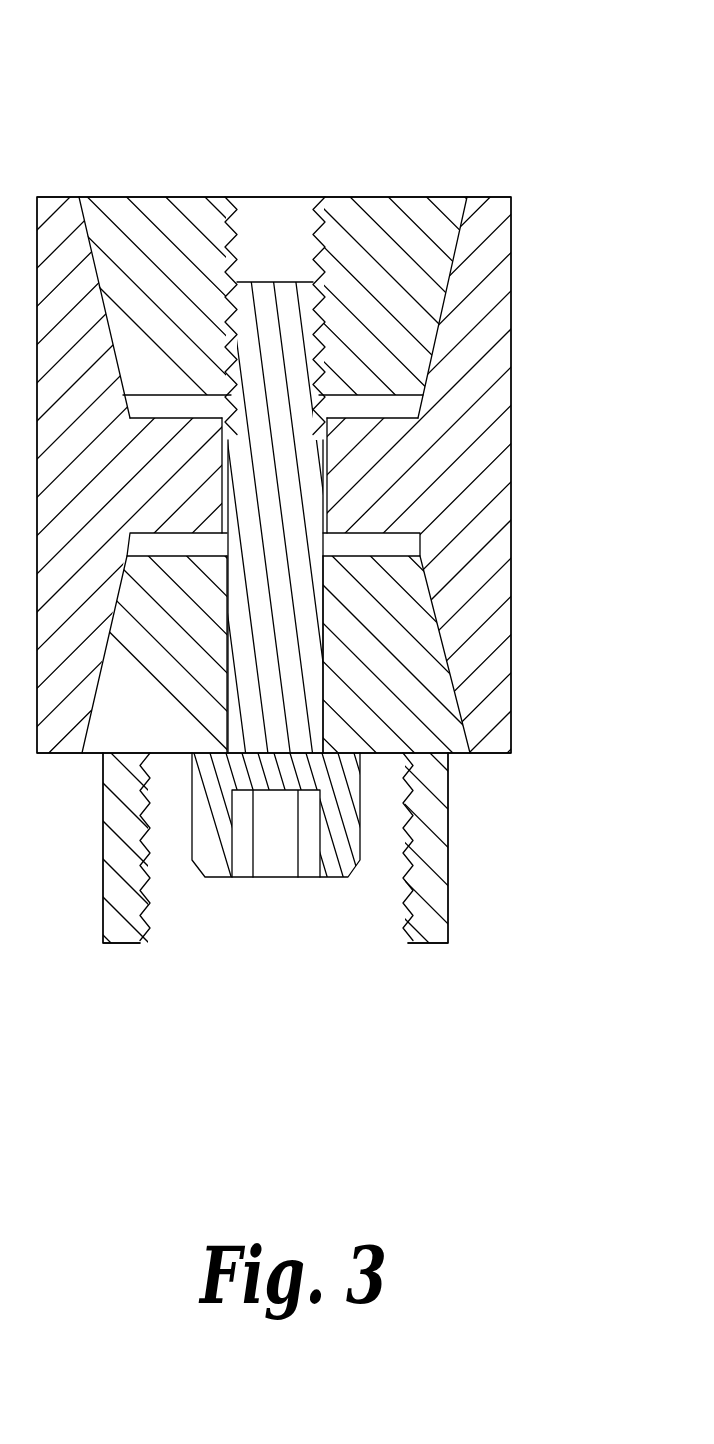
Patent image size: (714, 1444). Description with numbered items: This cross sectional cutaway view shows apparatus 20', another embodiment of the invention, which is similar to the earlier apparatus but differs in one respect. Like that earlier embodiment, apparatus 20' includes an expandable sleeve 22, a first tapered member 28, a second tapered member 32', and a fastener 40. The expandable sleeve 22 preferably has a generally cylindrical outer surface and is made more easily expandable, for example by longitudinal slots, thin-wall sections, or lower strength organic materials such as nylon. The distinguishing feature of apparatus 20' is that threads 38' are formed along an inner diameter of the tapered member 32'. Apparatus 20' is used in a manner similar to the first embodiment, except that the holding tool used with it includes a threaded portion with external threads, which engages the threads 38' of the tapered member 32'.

The apparatus 20' is at (317, 472).
The expandable sleeve 22 is at (460, 462).
The first tapered member 28 is at (150, 255).
The tapered member 32' is at (357, 848).
The threads 38' is at (276, 901).
The fastener 40 is at (214, 846).